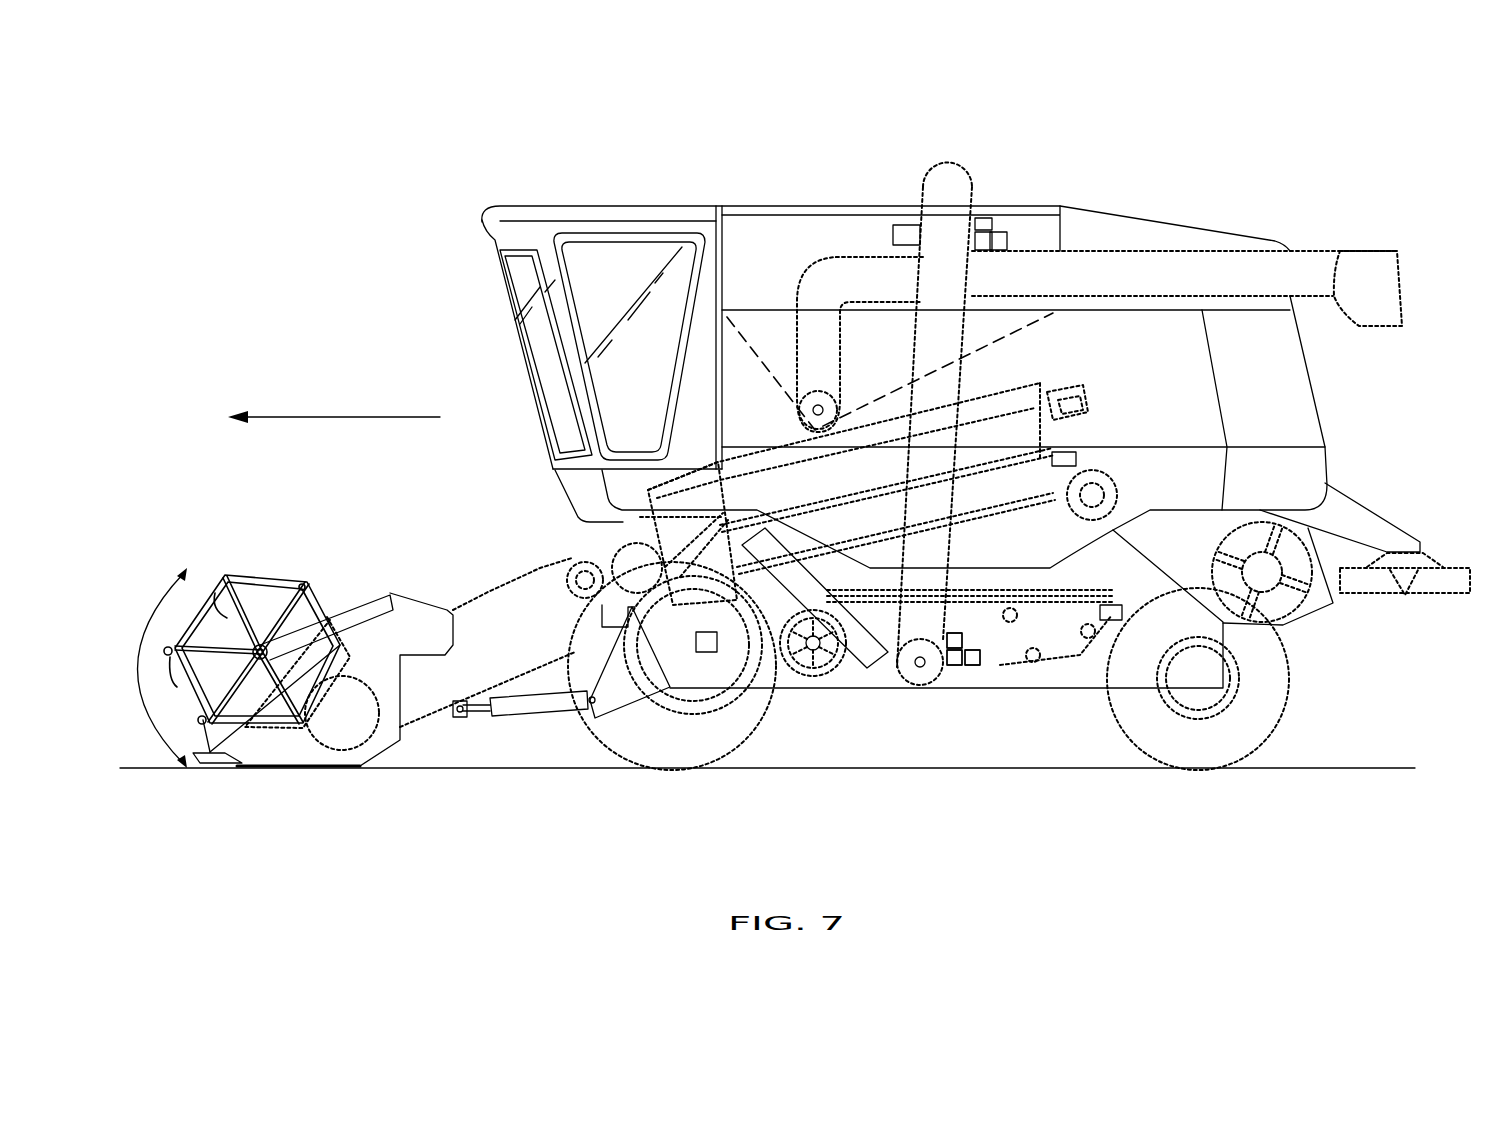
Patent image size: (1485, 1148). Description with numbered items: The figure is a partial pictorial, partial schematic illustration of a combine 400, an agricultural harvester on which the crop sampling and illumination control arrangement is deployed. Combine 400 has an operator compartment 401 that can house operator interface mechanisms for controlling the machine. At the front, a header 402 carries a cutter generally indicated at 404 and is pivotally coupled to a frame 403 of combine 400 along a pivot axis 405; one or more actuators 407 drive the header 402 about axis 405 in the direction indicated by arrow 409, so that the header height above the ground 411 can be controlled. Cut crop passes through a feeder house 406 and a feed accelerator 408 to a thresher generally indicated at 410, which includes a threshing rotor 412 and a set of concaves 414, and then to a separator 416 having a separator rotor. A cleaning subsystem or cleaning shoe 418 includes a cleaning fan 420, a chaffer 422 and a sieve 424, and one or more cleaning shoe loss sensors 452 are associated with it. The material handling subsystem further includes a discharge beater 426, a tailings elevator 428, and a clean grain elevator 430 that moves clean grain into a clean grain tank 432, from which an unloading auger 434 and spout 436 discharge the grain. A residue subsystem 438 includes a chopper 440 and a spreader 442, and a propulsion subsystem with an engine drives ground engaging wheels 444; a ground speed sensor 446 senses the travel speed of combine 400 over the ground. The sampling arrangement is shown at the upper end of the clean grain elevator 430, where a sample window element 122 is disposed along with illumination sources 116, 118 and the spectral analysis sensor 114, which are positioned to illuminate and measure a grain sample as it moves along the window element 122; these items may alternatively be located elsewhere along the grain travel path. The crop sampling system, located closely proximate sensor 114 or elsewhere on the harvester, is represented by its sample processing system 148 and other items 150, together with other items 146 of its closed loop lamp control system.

The combine 400 is at (1262, 105).
The operator compartment 401 is at (598, 206).
The header 402 is at (275, 580).
The frame 403 is at (630, 710).
The cutter 404 is at (257, 778).
The pivot axis 405 is at (486, 585).
The feeder house 406 is at (484, 588).
The actuator 407 is at (497, 717).
The feed accelerator 408 is at (580, 575).
The arrow 409 is at (138, 667).
The thresher 410 is at (988, 390).
The ground 411 is at (1050, 811).
The threshing rotor 412 is at (1050, 388).
The set of concaves 414 is at (1063, 470).
The separator 416 is at (977, 515).
The cleaning subsystem 418 is at (1113, 640).
The cleaning fan 420 is at (785, 660).
The chaffer 422 is at (1110, 588).
The sieve 424 is at (1050, 603).
The discharge beater 426 is at (1115, 482).
The tailings elevator 428 is at (870, 665).
The clean grain elevator 430 is at (952, 624).
The clean grain tank 432 is at (757, 300).
The unloading auger 434 is at (838, 420).
The spout 436 is at (1368, 251).
The residue subsystem 438 is at (1385, 500).
The chopper 440 is at (1273, 623).
The spreader 442 is at (1365, 595).
The ground engaging wheels 444 is at (1172, 772).
The ground speed sensor 446 is at (334, 408).
The cleaning shoe loss sensors 452 is at (1125, 614).
The other items 146 is at (702, 655).
The sample processing system 148 is at (1063, 452).
The other items 150 is at (898, 225).
The spectral analysis sensor 114 is at (1005, 235).
The illumination source 116 is at (985, 218).
The illumination source 118 is at (947, 630).
The sample window element 122 is at (980, 252).